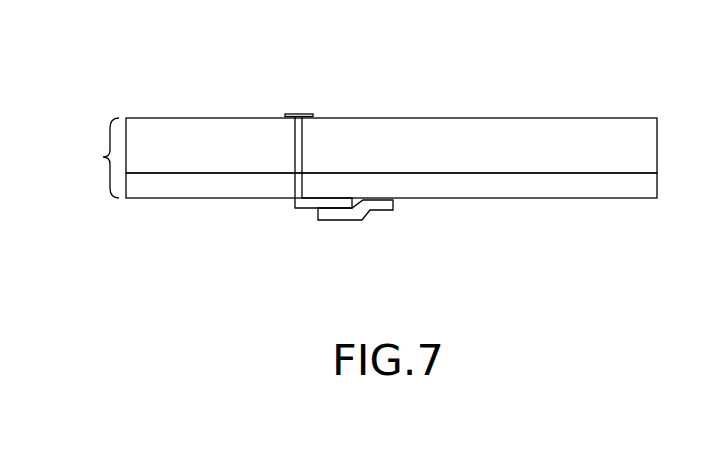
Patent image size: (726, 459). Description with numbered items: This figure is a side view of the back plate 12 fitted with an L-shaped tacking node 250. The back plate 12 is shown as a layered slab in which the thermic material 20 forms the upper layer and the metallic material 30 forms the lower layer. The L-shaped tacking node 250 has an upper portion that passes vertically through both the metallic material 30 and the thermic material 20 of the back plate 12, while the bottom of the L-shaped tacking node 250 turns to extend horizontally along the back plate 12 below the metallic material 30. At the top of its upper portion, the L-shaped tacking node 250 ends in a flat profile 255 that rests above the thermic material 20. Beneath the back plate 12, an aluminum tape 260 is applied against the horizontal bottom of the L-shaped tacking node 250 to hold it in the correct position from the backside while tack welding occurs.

The back plate 12 is at (103, 157).
The thermic material 20 is at (657, 118).
The metallic material 30 is at (562, 189).
The L-shaped tacking node 250 is at (295, 208).
The flat profile 255 is at (297, 114).
The aluminum tape 260 is at (382, 212).